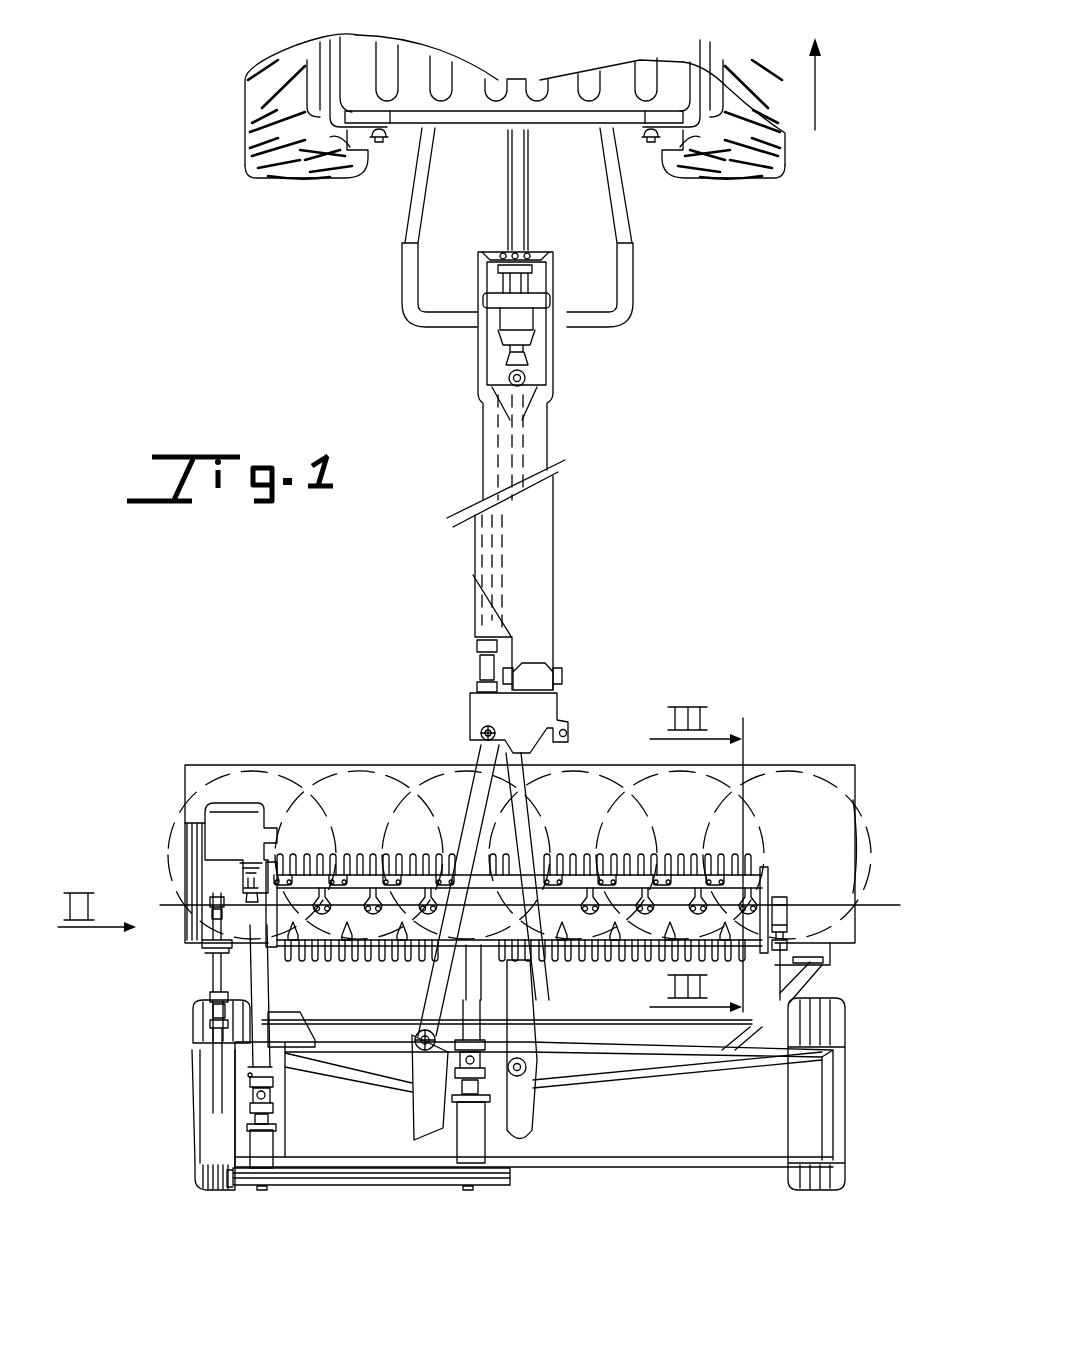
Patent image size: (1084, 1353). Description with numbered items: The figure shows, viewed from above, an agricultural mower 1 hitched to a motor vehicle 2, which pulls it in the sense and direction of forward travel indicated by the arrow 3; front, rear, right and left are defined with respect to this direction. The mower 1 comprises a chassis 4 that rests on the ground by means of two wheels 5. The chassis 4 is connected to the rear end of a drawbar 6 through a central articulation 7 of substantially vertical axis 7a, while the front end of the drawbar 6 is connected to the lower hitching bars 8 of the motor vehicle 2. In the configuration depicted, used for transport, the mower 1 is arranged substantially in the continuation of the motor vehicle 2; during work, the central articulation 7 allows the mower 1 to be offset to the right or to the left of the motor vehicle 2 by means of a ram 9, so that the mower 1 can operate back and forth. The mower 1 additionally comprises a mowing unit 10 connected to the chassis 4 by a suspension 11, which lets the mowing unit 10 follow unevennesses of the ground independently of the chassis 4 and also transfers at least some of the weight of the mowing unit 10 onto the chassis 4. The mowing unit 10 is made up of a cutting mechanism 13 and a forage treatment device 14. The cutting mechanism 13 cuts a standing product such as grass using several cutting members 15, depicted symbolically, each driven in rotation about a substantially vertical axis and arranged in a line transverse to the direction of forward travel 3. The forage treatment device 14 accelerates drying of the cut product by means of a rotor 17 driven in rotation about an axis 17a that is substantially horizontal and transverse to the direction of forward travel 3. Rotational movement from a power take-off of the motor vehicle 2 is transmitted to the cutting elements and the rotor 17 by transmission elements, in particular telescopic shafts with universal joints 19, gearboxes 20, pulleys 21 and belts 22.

The agricultural mower 1 is at (835, 578).
The motor vehicle 2 is at (246, 156).
The arrow indicating direction of forward travel 3 is at (815, 88).
The chassis 4 is at (665, 1173).
The wheels 5 is at (203, 1183).
The drawbar 6 is at (553, 510).
The central articulation 7 is at (537, 1050).
The axis of the central articulation 7a is at (528, 1074).
The lower hitching bars 8 is at (410, 207).
The ram 9 is at (430, 800).
The mowing unit 10 is at (865, 750).
The suspension 11 is at (822, 985).
The cutting mechanism 13 is at (200, 770).
The forage treatment device 14 is at (800, 861).
The cutting members 15 is at (747, 818).
The rotor 17 is at (595, 830).
The axis of the rotor 17a is at (878, 925).
The telescopic shafts with universal joints 19 is at (510, 150).
The gearboxes 20 is at (532, 340).
The pulleys 21 is at (263, 1192).
The belts 22 is at (215, 890).